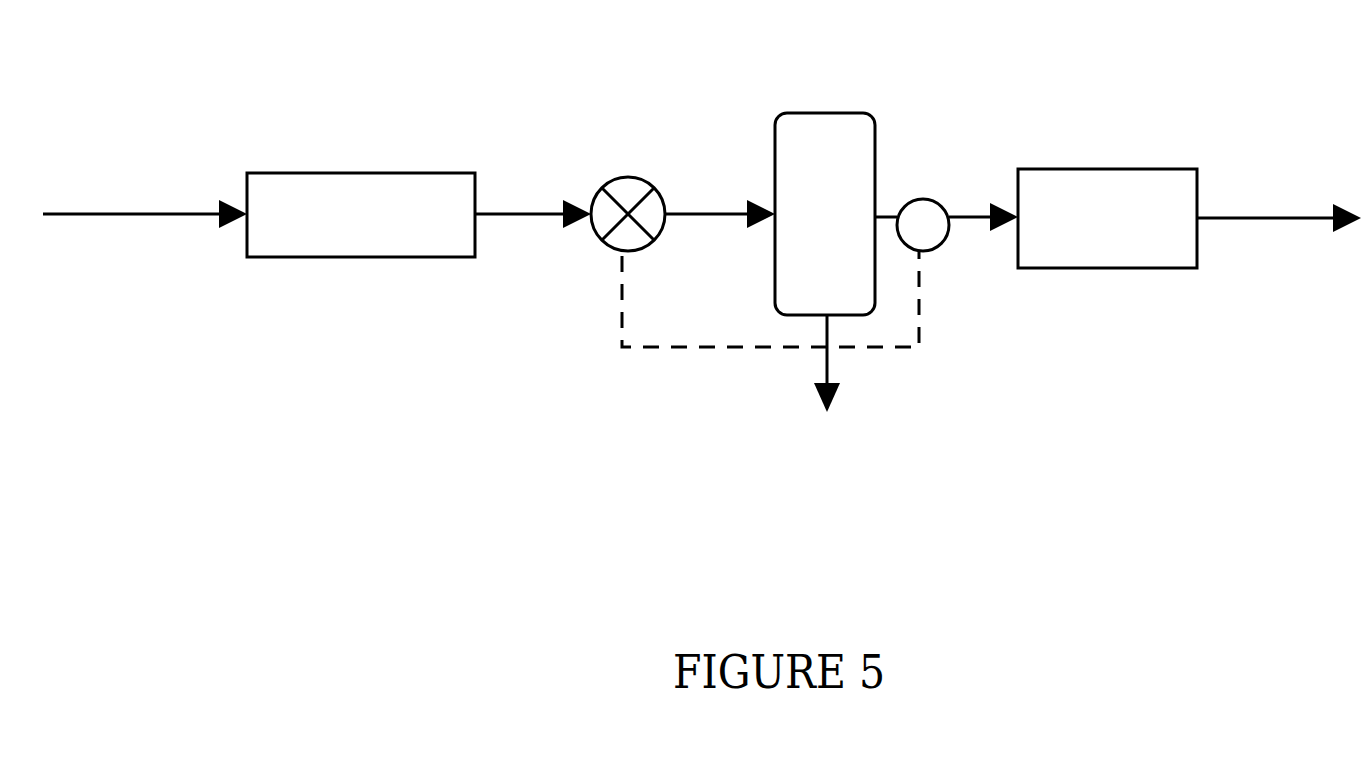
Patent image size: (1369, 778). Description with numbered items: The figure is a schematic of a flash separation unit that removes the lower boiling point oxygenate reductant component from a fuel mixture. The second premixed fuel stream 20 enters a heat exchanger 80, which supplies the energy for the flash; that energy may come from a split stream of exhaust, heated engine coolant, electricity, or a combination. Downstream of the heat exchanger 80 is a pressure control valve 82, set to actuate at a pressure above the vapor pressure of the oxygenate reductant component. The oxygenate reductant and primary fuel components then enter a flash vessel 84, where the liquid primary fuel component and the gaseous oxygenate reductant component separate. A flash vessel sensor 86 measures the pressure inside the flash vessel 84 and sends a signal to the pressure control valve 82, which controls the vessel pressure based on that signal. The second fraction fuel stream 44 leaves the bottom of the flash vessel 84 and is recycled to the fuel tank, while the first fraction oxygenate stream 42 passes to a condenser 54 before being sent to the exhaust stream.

The second premixed fuel stream 20 is at (110, 214).
The heat exchanger 80 is at (322, 173).
The pressure control valve 82 is at (620, 177).
The flash vessel 84 is at (810, 113).
The flash vessel sensor 86 is at (920, 199).
The first fraction oxygenate stream 42 is at (968, 215).
The condenser 54 is at (1082, 170).
The second fraction fuel stream 44 is at (827, 363).